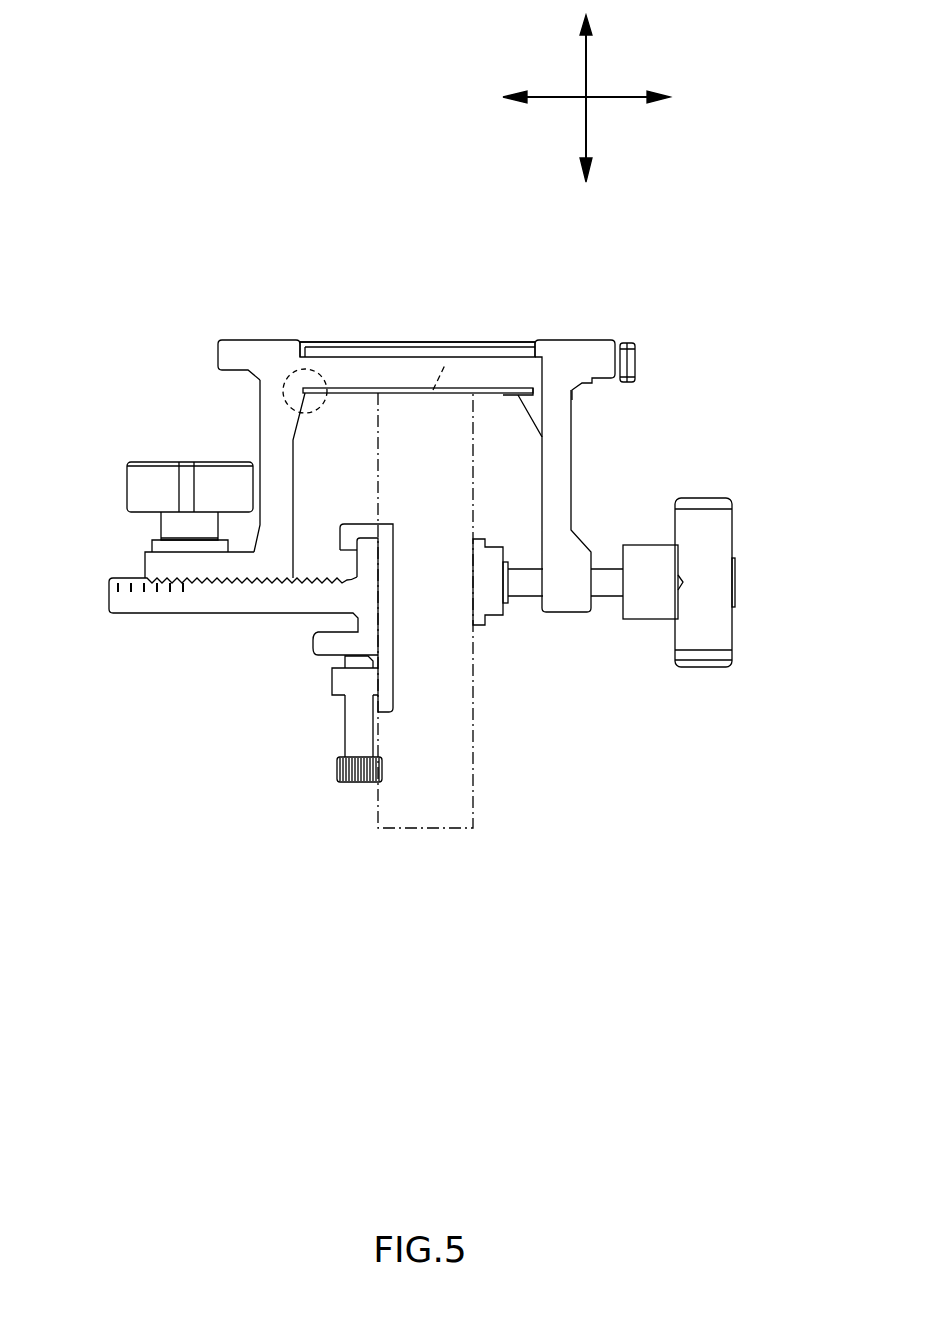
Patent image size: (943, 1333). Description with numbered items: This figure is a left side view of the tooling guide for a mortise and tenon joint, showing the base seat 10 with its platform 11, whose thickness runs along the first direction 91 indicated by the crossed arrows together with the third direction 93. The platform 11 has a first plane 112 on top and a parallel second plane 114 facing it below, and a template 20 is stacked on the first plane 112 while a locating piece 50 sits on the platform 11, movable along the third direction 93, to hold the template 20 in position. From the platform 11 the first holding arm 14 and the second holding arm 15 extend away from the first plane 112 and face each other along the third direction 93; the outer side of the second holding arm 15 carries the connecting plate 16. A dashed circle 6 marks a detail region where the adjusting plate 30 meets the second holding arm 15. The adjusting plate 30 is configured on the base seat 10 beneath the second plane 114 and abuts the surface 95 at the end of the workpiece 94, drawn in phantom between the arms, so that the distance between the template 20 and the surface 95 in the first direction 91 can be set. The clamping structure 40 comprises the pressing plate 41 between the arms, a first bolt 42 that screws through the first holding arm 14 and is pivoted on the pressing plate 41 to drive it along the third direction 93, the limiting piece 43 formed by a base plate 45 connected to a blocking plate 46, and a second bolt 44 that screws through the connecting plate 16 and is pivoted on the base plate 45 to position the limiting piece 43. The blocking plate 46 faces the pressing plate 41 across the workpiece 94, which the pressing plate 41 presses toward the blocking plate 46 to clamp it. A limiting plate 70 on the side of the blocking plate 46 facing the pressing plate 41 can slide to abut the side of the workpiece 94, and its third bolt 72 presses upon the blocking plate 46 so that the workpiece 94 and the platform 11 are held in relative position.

The detail circle 6 is at (280, 368).
The base seat 10 is at (218, 352).
The platform 11 is at (573, 340).
The first holding arm 14 is at (571, 502).
The second holding arm 15 is at (258, 428).
The connecting plate 16 is at (145, 571).
The template 20 is at (418, 343).
The adjusting plate 30 is at (513, 393).
The clamping structure 40 is at (289, 793).
The pressing plate 41 is at (473, 625).
The first bolt 42 is at (703, 668).
The limiting piece 43 is at (217, 707).
The second bolt 44 is at (127, 490).
The base plate 45 is at (245, 613).
The blocking plate 46 is at (372, 657).
The locating piece 50 is at (635, 360).
The limiting plate 70 is at (393, 655).
The third bolt 72 is at (358, 782).
The first direction 91 is at (583, 70).
The third direction 93 is at (615, 97).
The workpiece 94 is at (426, 830).
The surface 95 is at (445, 365).
The first plane 112 is at (353, 357).
The second plane 114 is at (532, 403).